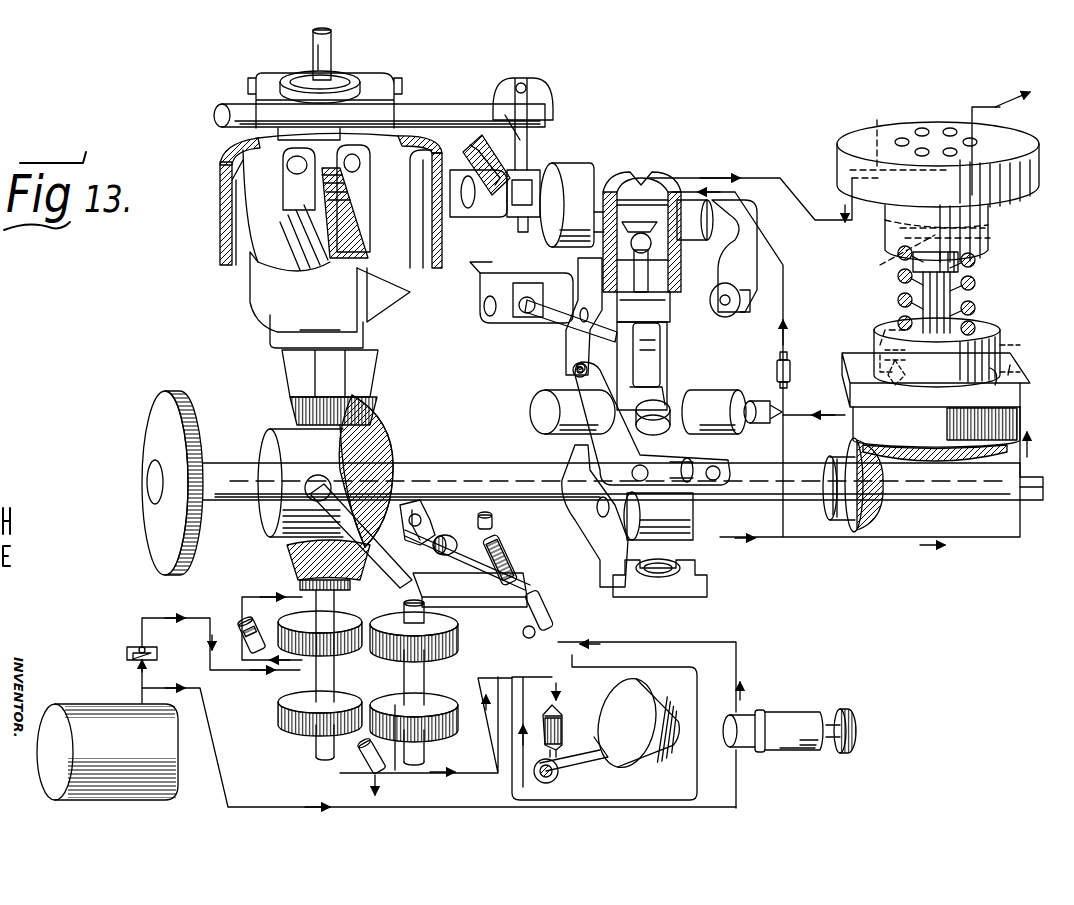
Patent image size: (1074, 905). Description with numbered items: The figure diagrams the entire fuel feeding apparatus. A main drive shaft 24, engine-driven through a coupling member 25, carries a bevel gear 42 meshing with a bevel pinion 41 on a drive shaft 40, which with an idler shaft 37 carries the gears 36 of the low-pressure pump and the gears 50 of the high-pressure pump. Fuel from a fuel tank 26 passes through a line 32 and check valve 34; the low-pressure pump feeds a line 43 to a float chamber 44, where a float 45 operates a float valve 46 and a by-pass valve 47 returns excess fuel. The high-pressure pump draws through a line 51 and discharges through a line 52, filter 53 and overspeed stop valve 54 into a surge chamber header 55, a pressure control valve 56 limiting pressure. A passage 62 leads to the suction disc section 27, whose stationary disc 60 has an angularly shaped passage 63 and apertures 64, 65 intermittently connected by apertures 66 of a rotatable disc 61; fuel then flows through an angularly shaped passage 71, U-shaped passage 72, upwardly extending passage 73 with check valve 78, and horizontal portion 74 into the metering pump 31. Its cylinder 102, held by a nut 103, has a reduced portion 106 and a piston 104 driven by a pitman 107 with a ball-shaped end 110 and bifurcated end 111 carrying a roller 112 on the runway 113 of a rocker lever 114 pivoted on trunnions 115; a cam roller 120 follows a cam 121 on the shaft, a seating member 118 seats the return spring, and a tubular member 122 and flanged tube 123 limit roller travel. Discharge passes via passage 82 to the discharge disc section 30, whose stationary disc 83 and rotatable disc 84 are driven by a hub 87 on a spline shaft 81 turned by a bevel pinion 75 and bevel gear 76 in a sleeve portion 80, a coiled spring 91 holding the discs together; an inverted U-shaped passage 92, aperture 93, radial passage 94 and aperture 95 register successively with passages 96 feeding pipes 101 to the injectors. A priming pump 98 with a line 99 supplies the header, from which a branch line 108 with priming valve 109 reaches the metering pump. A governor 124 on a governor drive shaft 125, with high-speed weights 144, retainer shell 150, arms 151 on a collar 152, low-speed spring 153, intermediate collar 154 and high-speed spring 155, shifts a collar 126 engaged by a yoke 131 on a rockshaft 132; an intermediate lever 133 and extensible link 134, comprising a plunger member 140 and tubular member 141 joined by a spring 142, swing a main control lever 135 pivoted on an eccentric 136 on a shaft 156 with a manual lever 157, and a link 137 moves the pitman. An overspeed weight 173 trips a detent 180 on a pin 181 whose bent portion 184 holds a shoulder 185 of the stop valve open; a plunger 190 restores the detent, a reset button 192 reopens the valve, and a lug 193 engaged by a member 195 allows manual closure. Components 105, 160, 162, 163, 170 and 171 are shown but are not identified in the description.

The main drive shaft 24 is at (496, 462).
The coupling member 25 is at (172, 395).
The fuel tank 26 is at (75, 712).
The suction disc section 27 is at (1012, 330).
The discharge disc section 30 is at (1000, 233).
The metering pump 31 is at (638, 183).
The line 32 is at (140, 672).
The check valve 34 is at (127, 652).
The gears 36 is at (292, 730).
The idler shaft 37 is at (424, 688).
The drive shaft 40 is at (315, 688).
The bevel pinion 41 is at (290, 570).
The bevel gear 42 is at (388, 435).
The line 43 is at (490, 770).
The float chamber 44 is at (700, 692).
The float 45 is at (650, 740).
The float valve 46 is at (568, 720).
The by-pass valve 47 is at (362, 770).
The gears 50 is at (300, 620).
The line 51 is at (516, 688).
The line 52 is at (538, 600).
The filter 53 is at (512, 568).
The overspeed stop valve 54 is at (495, 540).
The surge chamber header 55 is at (790, 540).
The pressure control valve 56 is at (240, 630).
The stationary disc 60 is at (1002, 352).
The rotatable disc 61 is at (878, 328).
The upwardly extending passage 62 is at (1030, 410).
The angularly shaped passage 63 is at (992, 384).
The apertures 64 is at (1025, 372).
The apertures 65 is at (875, 355).
The apertures 66 is at (878, 340).
The angularly shaped passage 71 is at (893, 388).
The U-shaped passage 72 is at (820, 417).
The upwardly extending passage 73 is at (786, 292).
The horizontally extending portion 74 is at (717, 256).
The bevel pinion 75 is at (872, 528).
The bevel gear 76 is at (978, 463).
The check valve 78 is at (790, 367).
The sleeve portion 80 is at (915, 434).
The spline shaft 81 is at (952, 302).
The passage 82 is at (672, 178).
The stationary disc 83 is at (840, 162).
The rotatable disc 84 is at (888, 232).
The hub 87 is at (962, 262).
The coiled spring 91 is at (975, 284).
The inverted U-shaped passage 92 is at (876, 132).
The aperture 93 is at (890, 250).
The radially extending passage 94 is at (992, 244).
The aperture 95 is at (990, 222).
The vertically extending passages 96 is at (1034, 173).
The priming pump 98 is at (795, 718).
The line 99 is at (740, 782).
The pipes 101 is at (992, 100).
The cylinder 102 is at (668, 300).
The nut 103 is at (236, 222).
The piston 104 is at (665, 292).
The block 105 is at (305, 330).
The reduced portion 106 is at (285, 378).
The pitman 107 is at (300, 408).
The branch line 108 is at (783, 430).
The priming valve 109 is at (757, 400).
The ball-shaped end 110 is at (642, 251).
The bifurcated end 111 is at (668, 362).
The roller 112 is at (665, 388).
The runway 113 is at (675, 428).
The rocker lever 114 is at (595, 440).
The trunnion 115 is at (530, 398).
The seating member 118 is at (668, 597).
The cam roller 120 is at (672, 520).
The cam 121 is at (600, 560).
The tubular member 122 is at (575, 378).
The flanged tube 123 is at (700, 468).
The governor 124 is at (240, 293).
The governor drive shaft 125 is at (333, 50).
The collar 126 is at (345, 77).
The yoke 131 is at (360, 90).
The rockshaft 132 is at (440, 115).
The intermediate lever 133 is at (527, 150).
The extensible link 134 is at (530, 130).
The main control lever 135 is at (516, 250).
The eccentric 136 is at (575, 178).
The link 137 is at (575, 320).
The member 140 is at (470, 130).
The member 141 is at (488, 218).
The spring 142 is at (478, 148).
The high-speed governor weights 144 is at (384, 285).
The retainer shell 150 is at (220, 190).
The arms 151 is at (290, 200).
The collar 152 is at (355, 184).
The low-speed governor spring 153 is at (345, 200).
The intermediate collar 154 is at (350, 214).
The high-speed governor spring 155 is at (350, 240).
The shaft 156 is at (598, 210).
The manually operable lever 157 is at (735, 272).
The slide block 160 is at (520, 262).
The rod 162 is at (560, 318).
The pin 163 is at (572, 368).
The cylinder 170 is at (264, 433).
The lug 171 is at (485, 285).
The weight 173 is at (318, 480).
The detent 180 is at (335, 540).
The pin 181 is at (430, 500).
The laterally bent portion 184 is at (480, 550).
The shoulder 185 is at (530, 590).
The plunger 190 is at (413, 575).
The reset button 192 is at (535, 632).
The lug 193 is at (425, 505).
The member 195 is at (450, 540).